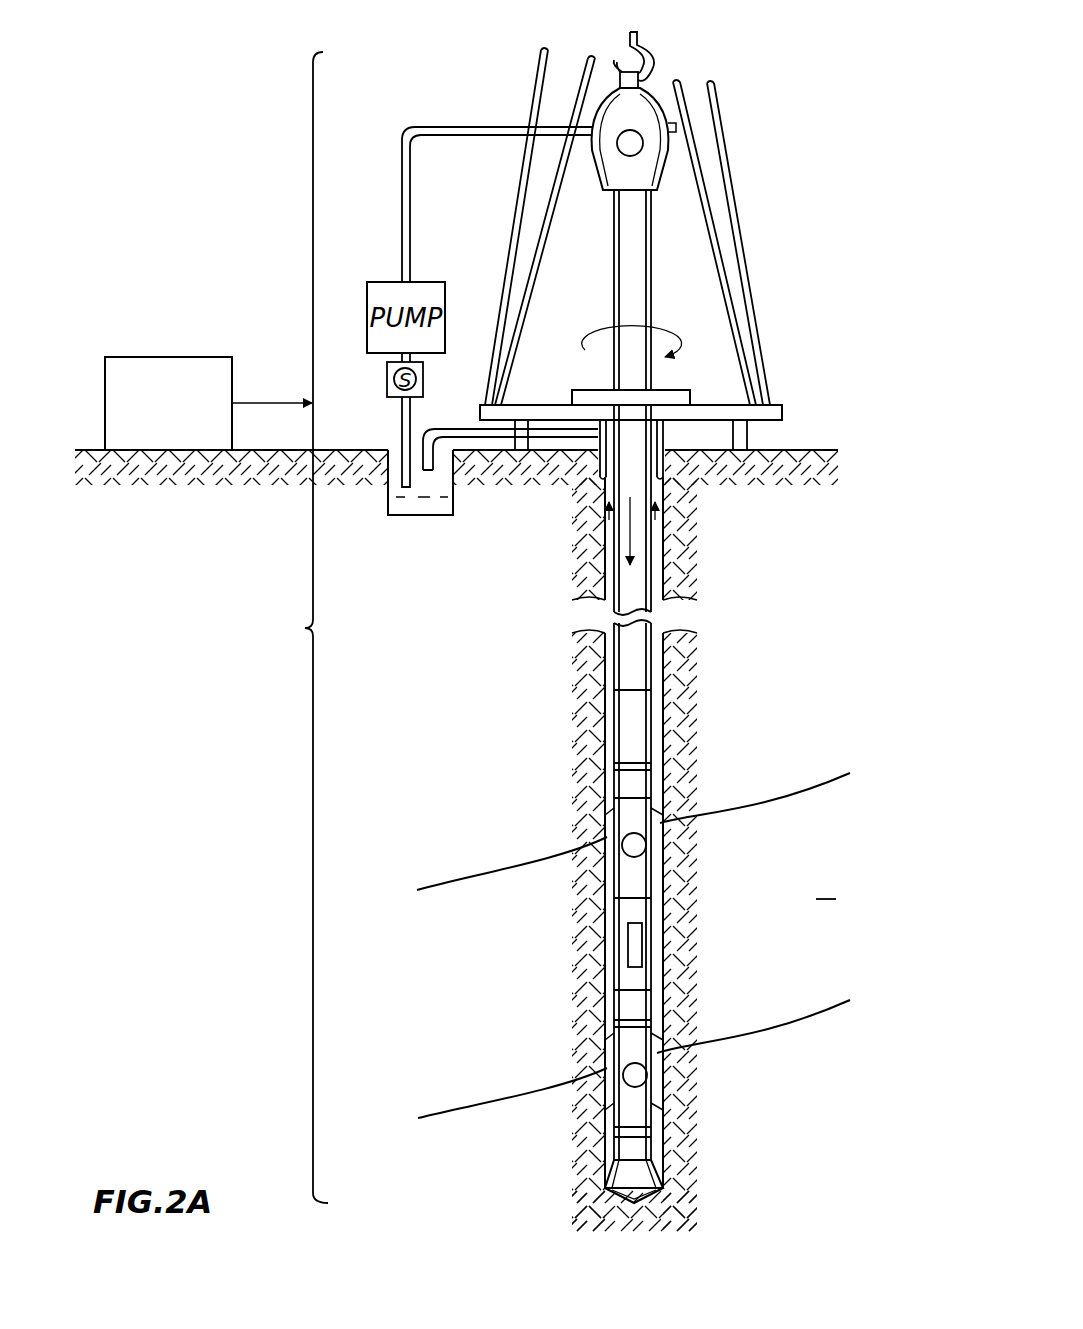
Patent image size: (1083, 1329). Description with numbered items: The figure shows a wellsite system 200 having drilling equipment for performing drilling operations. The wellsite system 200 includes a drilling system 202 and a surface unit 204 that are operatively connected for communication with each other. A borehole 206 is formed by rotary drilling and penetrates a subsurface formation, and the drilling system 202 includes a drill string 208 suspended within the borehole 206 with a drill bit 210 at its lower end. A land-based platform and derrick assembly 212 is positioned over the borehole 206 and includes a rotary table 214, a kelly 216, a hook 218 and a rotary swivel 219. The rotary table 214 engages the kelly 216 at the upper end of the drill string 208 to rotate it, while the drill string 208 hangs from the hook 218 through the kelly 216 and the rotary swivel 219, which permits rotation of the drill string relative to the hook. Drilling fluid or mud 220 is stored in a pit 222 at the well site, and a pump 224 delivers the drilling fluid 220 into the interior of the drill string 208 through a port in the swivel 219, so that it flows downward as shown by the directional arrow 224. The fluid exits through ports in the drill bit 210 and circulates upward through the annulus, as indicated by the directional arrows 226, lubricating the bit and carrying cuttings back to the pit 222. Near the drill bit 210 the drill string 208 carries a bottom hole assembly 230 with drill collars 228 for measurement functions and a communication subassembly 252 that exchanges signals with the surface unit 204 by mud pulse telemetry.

The wellsite system 200 is at (140, 72).
The drilling system 202 is at (305, 628).
The surface unit 204 is at (128, 357).
The borehole 206 is at (660, 745).
The drill string 208 is at (640, 652).
The drill bit 210 is at (630, 1177).
The platform and derrick assembly 212 is at (755, 322).
The rotary table 214 is at (690, 396).
The kelly 216 is at (633, 287).
The hook 218 is at (640, 40).
The rotary swivel 219 is at (600, 185).
The drilling fluid 220 is at (423, 498).
The pit 222 is at (400, 487).
The pump 224 is at (598, 533).
The directional arrows 226 is at (657, 534).
The drill collars 228 is at (630, 883).
The bottom hole assembly 230 is at (707, 891).
The communication subassembly 252 is at (643, 933).